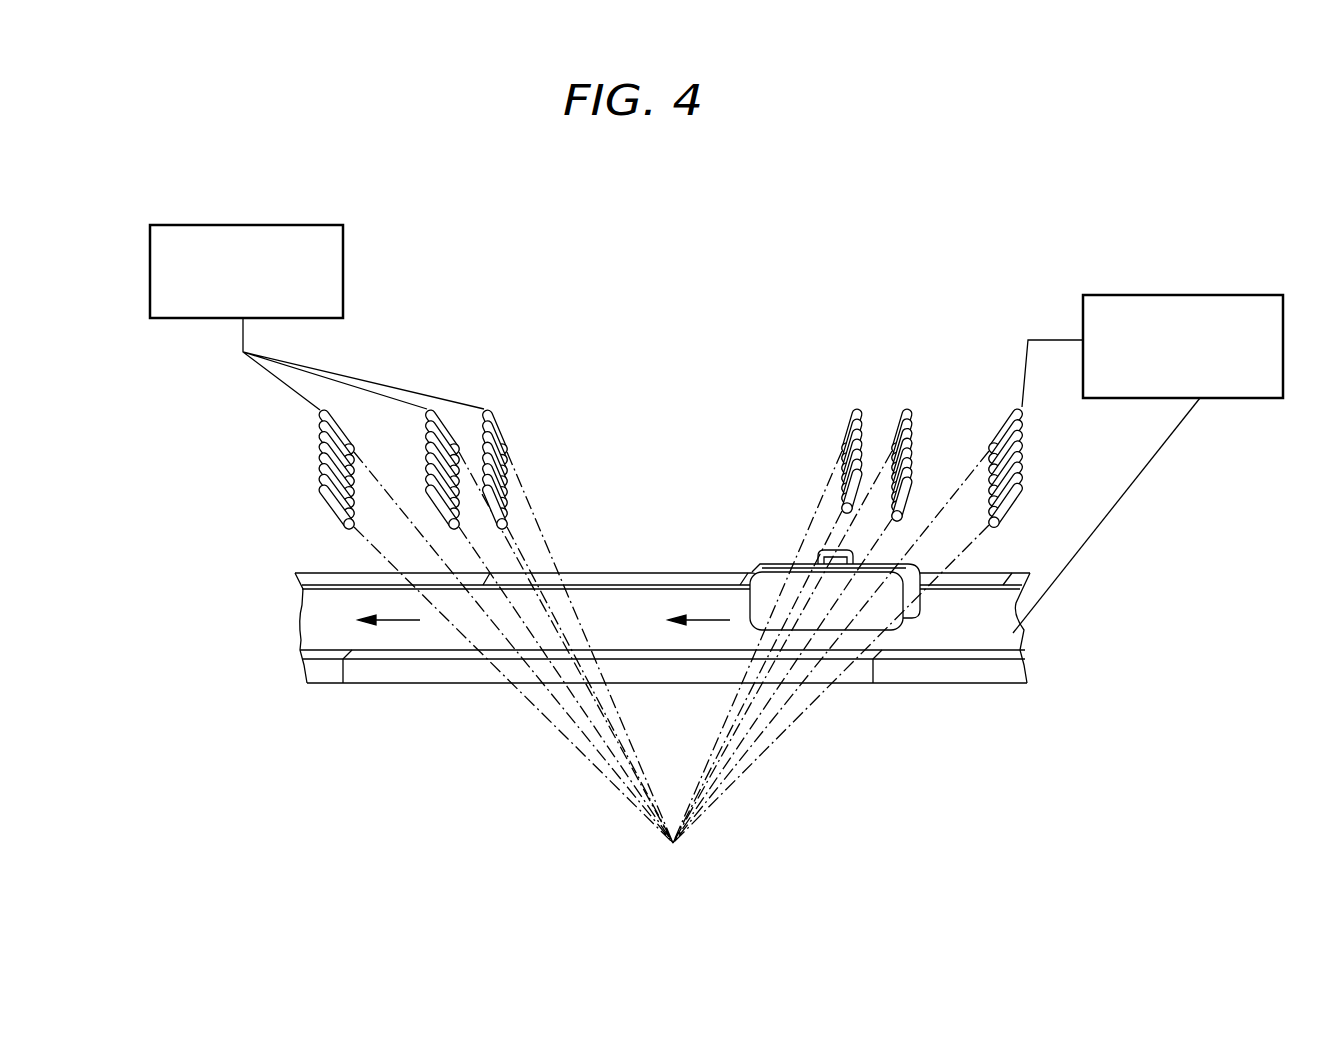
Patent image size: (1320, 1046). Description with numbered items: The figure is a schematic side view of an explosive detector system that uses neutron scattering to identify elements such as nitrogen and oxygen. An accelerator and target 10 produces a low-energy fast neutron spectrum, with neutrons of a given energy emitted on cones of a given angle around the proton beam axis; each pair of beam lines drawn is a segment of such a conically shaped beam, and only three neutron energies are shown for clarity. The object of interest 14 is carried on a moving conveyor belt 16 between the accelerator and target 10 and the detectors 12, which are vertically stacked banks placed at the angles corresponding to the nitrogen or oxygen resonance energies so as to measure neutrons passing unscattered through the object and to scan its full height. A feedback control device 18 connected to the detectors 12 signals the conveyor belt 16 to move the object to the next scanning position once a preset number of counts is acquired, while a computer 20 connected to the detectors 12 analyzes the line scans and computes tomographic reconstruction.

The accelerator and target 10 is at (675, 847).
The detectors 12 is at (912, 407).
The object of interest 14 is at (905, 596).
The moving conveyor belt 16 is at (1013, 632).
The feedback control device 18 is at (1254, 306).
The computer 20 is at (343, 297).